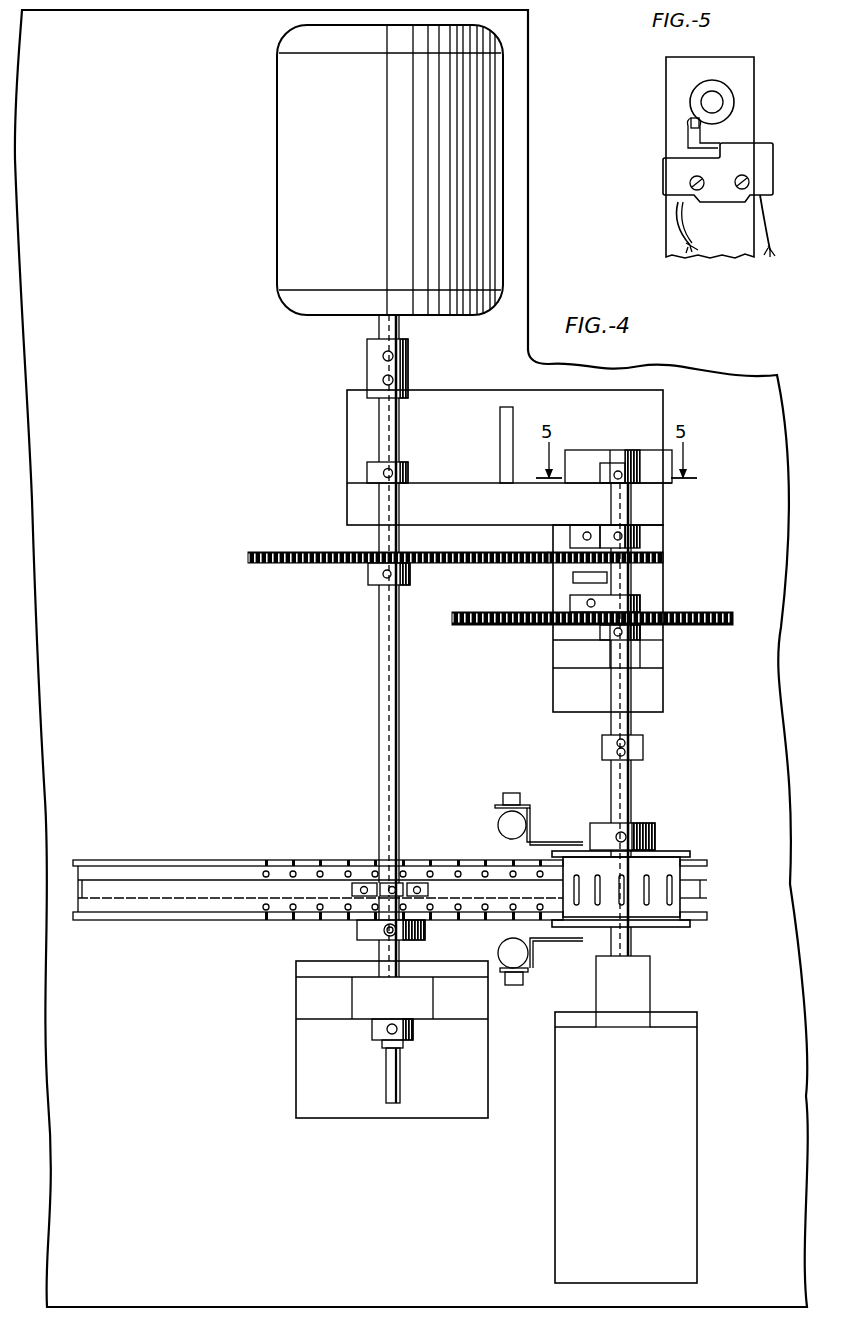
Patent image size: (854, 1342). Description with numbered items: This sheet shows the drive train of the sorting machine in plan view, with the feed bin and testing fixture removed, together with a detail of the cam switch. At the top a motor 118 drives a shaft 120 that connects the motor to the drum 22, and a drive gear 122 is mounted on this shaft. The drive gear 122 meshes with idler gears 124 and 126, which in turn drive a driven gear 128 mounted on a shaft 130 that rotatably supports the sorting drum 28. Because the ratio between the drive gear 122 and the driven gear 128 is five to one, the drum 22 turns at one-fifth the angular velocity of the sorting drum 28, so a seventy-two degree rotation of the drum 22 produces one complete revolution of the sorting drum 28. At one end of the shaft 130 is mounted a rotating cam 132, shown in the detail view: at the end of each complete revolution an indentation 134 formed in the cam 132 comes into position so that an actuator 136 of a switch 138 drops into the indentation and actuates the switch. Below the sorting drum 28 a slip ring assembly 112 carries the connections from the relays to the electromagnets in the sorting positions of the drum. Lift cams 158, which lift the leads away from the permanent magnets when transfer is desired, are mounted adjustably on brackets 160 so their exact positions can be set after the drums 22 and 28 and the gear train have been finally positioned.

In FIG. 4, the motor 118 is at (283, 215).
In FIG. 4, the shaft 120 is at (383, 638).
In FIG. 4, the drive gear 122 is at (304, 565).
In FIG. 4, the idler gear 124 is at (550, 563).
In FIG. 4, the idler gear 126 is at (507, 627).
In FIG. 4, the driven gear 128 is at (690, 611).
In FIG. 4, the shaft 130 is at (634, 731).
In FIG. 4, the rotating cam 132 is at (598, 461).
In FIG. 5, the rotating cam 132 is at (740, 100).
In FIG. 5, the indentation 134 is at (690, 118).
In FIG. 5, the actuator 136 is at (688, 124).
In FIG. 5, the switch 138 is at (668, 181).
In FIG. 4, the drum 22 is at (180, 857).
In FIG. 4, the sorting drum 28 is at (677, 850).
In FIG. 4, the lift cam 158 is at (580, 828).
In FIG. 4, the bracket 160 is at (504, 823).
In FIG. 4, the slip ring assembly 112 is at (697, 1062).